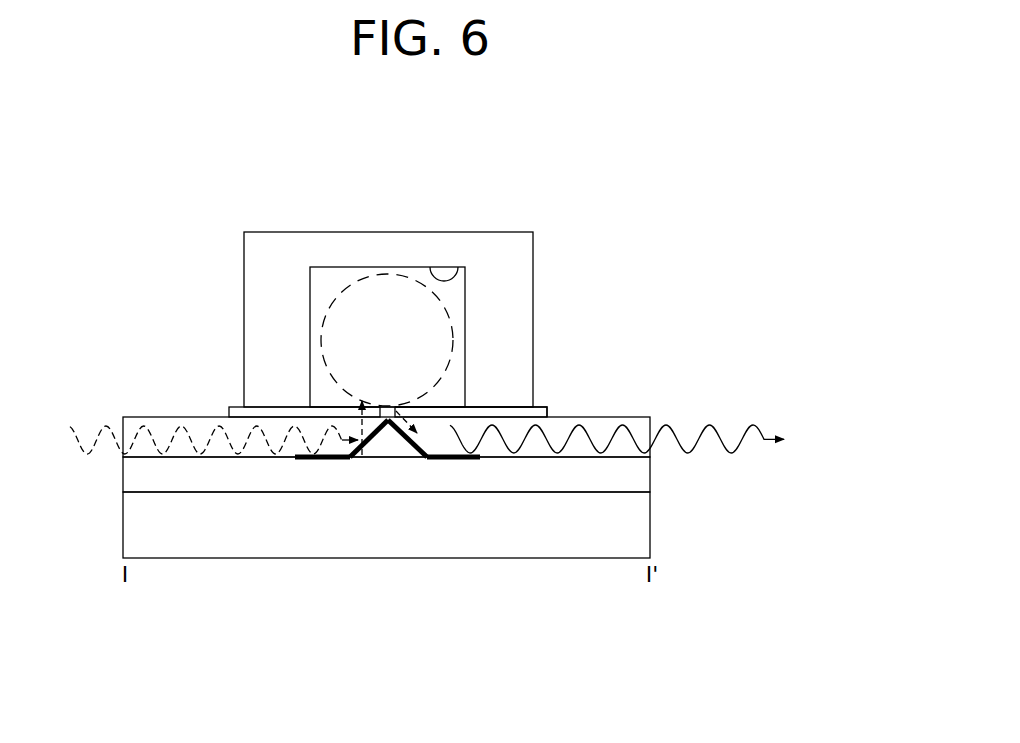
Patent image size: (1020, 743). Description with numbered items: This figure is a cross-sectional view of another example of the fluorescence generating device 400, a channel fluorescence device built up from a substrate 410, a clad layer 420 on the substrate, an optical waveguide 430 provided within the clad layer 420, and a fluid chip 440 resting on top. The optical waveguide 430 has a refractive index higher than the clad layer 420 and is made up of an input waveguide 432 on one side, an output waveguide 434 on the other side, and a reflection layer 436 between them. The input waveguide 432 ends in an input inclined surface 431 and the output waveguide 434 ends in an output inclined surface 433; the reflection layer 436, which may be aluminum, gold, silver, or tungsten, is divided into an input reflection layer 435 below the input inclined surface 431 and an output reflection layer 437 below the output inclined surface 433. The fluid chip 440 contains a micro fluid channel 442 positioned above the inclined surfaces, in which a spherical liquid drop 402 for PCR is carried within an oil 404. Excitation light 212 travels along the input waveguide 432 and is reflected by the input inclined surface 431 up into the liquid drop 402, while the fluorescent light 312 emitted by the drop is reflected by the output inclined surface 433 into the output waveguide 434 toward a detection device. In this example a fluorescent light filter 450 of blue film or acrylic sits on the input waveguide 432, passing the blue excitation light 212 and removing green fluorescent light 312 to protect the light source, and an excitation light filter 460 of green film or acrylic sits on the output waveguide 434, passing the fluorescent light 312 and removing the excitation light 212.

The fluorescence generating device 400 is at (605, 165).
The liquid drop 402 is at (386, 296).
The oil 404 is at (322, 278).
The substrate 410 is at (642, 524).
The clad layer 420 is at (642, 473).
The fluorescent light filter 450 is at (245, 408).
The optical waveguide 430 is at (309, 374).
The input waveguide 432 is at (277, 423).
The output waveguide 434 is at (503, 420).
The fluid chip 440 is at (265, 250).
The micro fluid channel 442 is at (460, 264).
The excitation light filter 460 is at (522, 408).
The reflection layer 436 is at (392, 534).
The input inclined surface 431 is at (343, 458).
The output inclined surface 433 is at (436, 453).
The input reflection layer 435 is at (380, 447).
The output reflection layer 437 is at (404, 447).
The excitation light 212 is at (192, 435).
The fluorescent light 312 is at (639, 439).